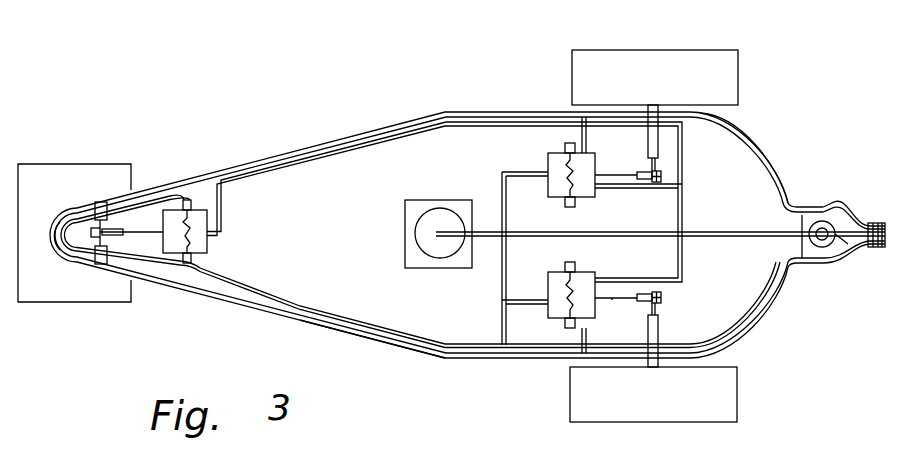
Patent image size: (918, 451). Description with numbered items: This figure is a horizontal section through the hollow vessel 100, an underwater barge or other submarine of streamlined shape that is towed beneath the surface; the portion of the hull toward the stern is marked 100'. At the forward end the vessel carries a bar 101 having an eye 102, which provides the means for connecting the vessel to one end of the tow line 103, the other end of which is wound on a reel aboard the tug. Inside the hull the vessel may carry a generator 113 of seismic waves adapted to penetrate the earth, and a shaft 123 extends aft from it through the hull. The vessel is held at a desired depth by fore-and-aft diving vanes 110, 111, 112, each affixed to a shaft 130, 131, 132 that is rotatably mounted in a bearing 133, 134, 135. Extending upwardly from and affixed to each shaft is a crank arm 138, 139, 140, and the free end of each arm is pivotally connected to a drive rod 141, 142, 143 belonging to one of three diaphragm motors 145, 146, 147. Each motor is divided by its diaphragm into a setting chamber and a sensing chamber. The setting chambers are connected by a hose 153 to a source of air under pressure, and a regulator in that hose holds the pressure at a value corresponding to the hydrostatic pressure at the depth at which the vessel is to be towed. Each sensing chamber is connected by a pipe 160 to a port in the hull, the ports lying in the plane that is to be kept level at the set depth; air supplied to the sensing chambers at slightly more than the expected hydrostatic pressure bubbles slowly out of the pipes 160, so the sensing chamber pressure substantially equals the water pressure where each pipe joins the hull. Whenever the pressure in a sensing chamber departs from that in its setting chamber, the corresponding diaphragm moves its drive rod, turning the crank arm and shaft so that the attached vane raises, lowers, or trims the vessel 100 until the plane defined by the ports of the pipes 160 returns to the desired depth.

The vessel 100 is at (467, 216).
The tail section of hull 100' is at (744, 166).
The bar 101 is at (795, 246).
The eye 102 is at (817, 250).
The tow line 103 is at (837, 244).
The diving vane 110 is at (680, 49).
The diving vane 111 is at (688, 407).
The diving vane 112 is at (30, 163).
The generator 113 is at (405, 230).
The propeller shaft 123 is at (488, 240).
The shaft 130 is at (660, 170).
The shaft 131 is at (663, 303).
The shaft 132 is at (108, 243).
The bearing 133 is at (655, 106).
The bearing 134 is at (660, 331).
The bearing 135 is at (98, 201).
The crank arm 138 is at (662, 178).
The crank arm 139 is at (665, 298).
The crank arm 140 is at (62, 240).
The drive rod 141 is at (618, 180).
The drive rod 142 is at (612, 322).
The drive rod 143 is at (143, 228).
The diaphragm motor 145 is at (548, 160).
The diaphragm motor 146 is at (548, 284).
The diaphragm motor 147 is at (208, 248).
The hose 153 is at (343, 318).
The pipe 160 is at (75, 215).